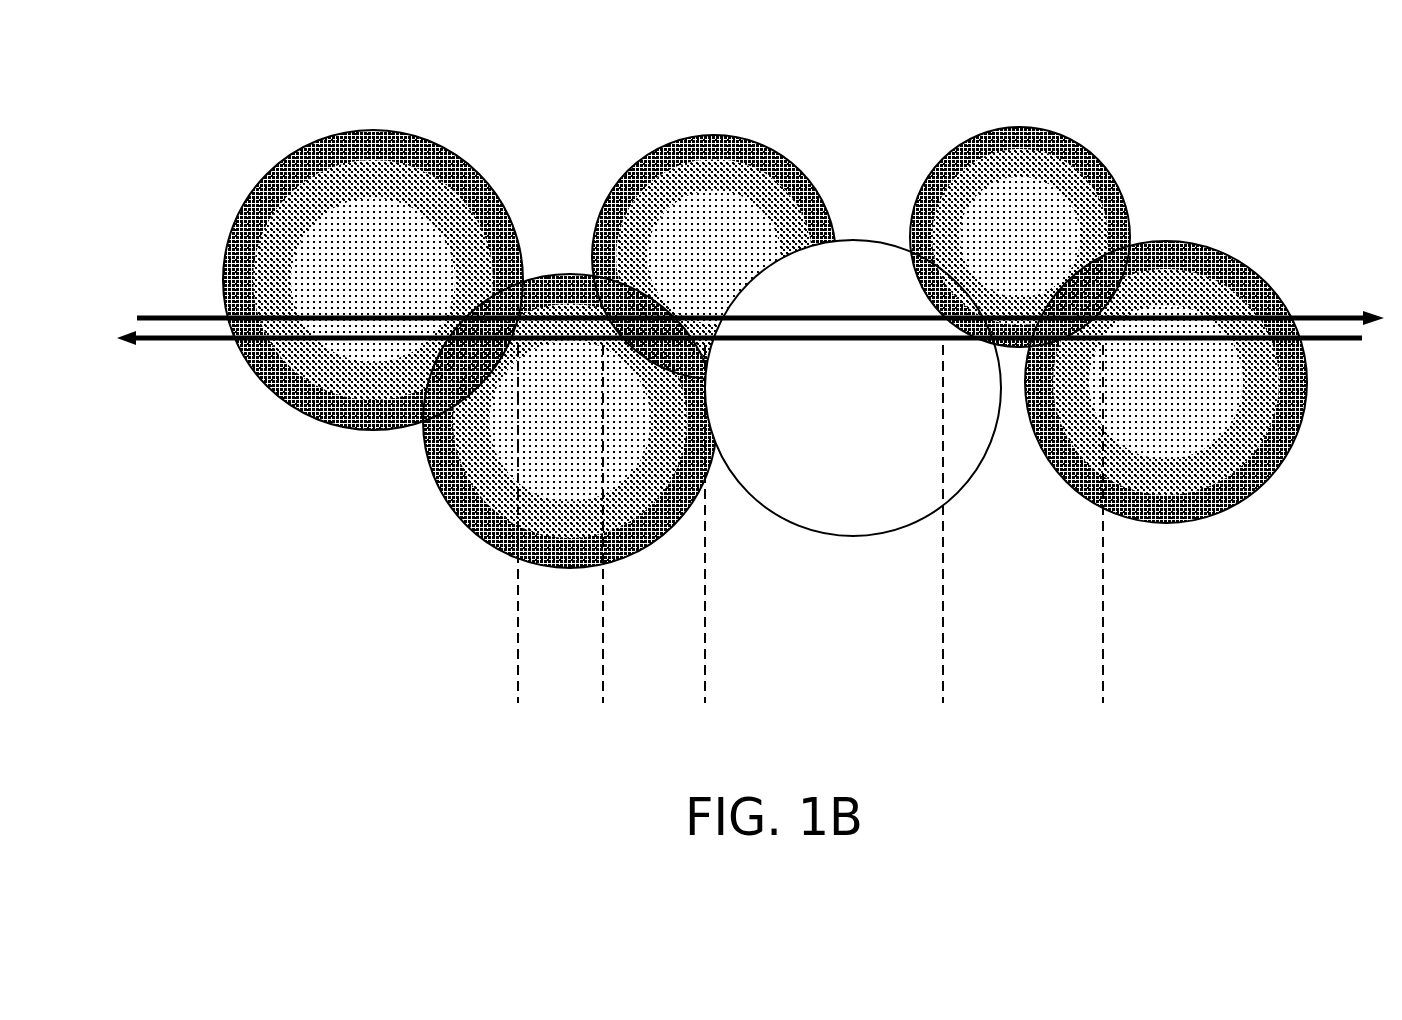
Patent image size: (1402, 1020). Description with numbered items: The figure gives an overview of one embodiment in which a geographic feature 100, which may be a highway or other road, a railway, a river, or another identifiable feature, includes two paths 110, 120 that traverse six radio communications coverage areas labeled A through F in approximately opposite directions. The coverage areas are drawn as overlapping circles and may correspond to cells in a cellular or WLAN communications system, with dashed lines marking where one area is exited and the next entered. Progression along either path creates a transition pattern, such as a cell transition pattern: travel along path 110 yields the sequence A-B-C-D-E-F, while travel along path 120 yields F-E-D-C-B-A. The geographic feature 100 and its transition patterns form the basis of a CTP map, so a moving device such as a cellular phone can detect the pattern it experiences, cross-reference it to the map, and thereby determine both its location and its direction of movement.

The geographic feature 100 is at (137, 124).
The path 110 is at (1332, 314).
The path 120 is at (188, 345).